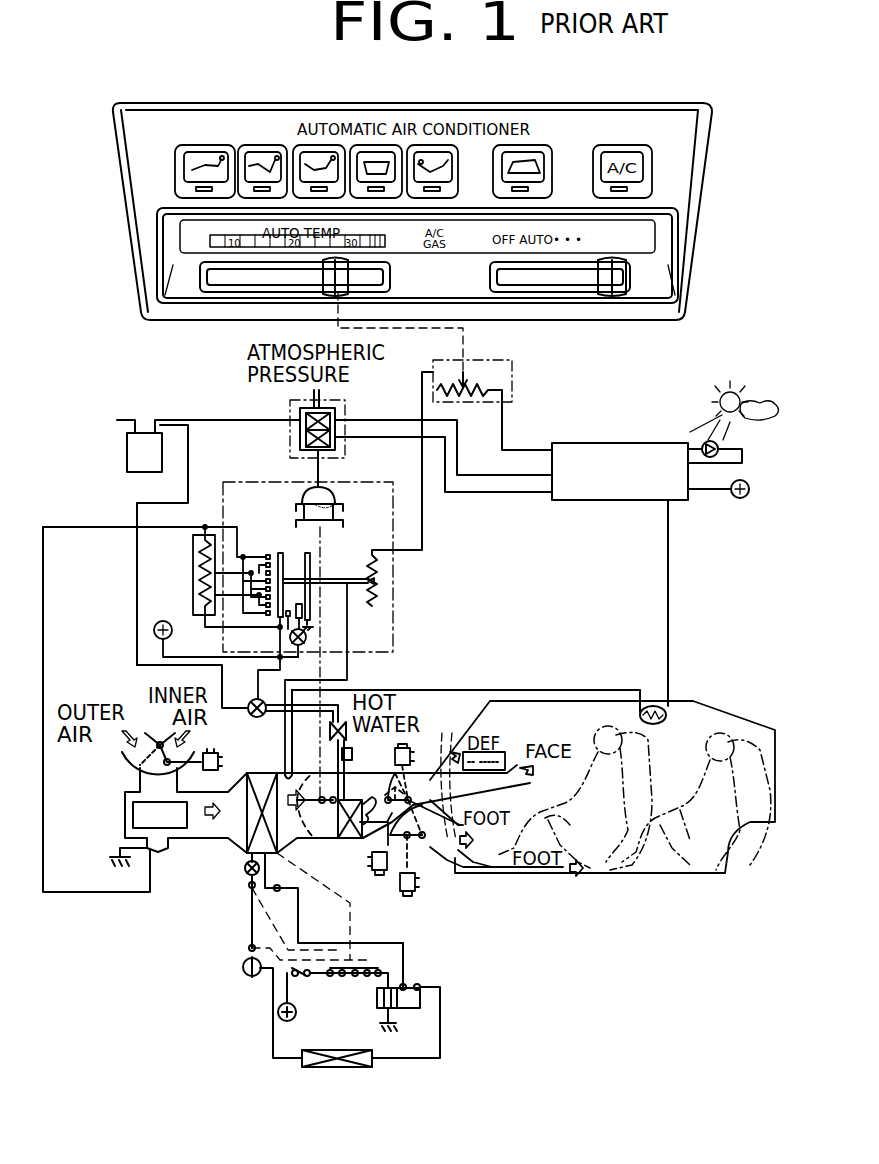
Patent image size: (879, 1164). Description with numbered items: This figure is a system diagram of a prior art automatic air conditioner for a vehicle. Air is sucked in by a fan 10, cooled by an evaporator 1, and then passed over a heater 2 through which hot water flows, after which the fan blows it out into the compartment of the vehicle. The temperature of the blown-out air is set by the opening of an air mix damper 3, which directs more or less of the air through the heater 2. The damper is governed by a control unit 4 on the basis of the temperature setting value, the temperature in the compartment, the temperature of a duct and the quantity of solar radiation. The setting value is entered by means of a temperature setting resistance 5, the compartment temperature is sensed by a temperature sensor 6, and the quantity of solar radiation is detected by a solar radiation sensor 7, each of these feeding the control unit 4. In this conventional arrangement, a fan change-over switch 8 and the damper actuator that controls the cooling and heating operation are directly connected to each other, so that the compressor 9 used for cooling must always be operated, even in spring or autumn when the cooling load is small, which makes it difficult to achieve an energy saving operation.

The evaporator 1 is at (243, 845).
The heater 2 is at (364, 838).
The air mix damper 3 is at (314, 776).
The control unit 4 is at (657, 500).
The temperature setting resistance 5 is at (490, 386).
The temperature sensor 6 is at (652, 704).
The solar radiation sensor 7 is at (718, 446).
The fan change-over switch 8 is at (278, 553).
The compressor 9 is at (412, 988).
The fan 10 is at (178, 822).